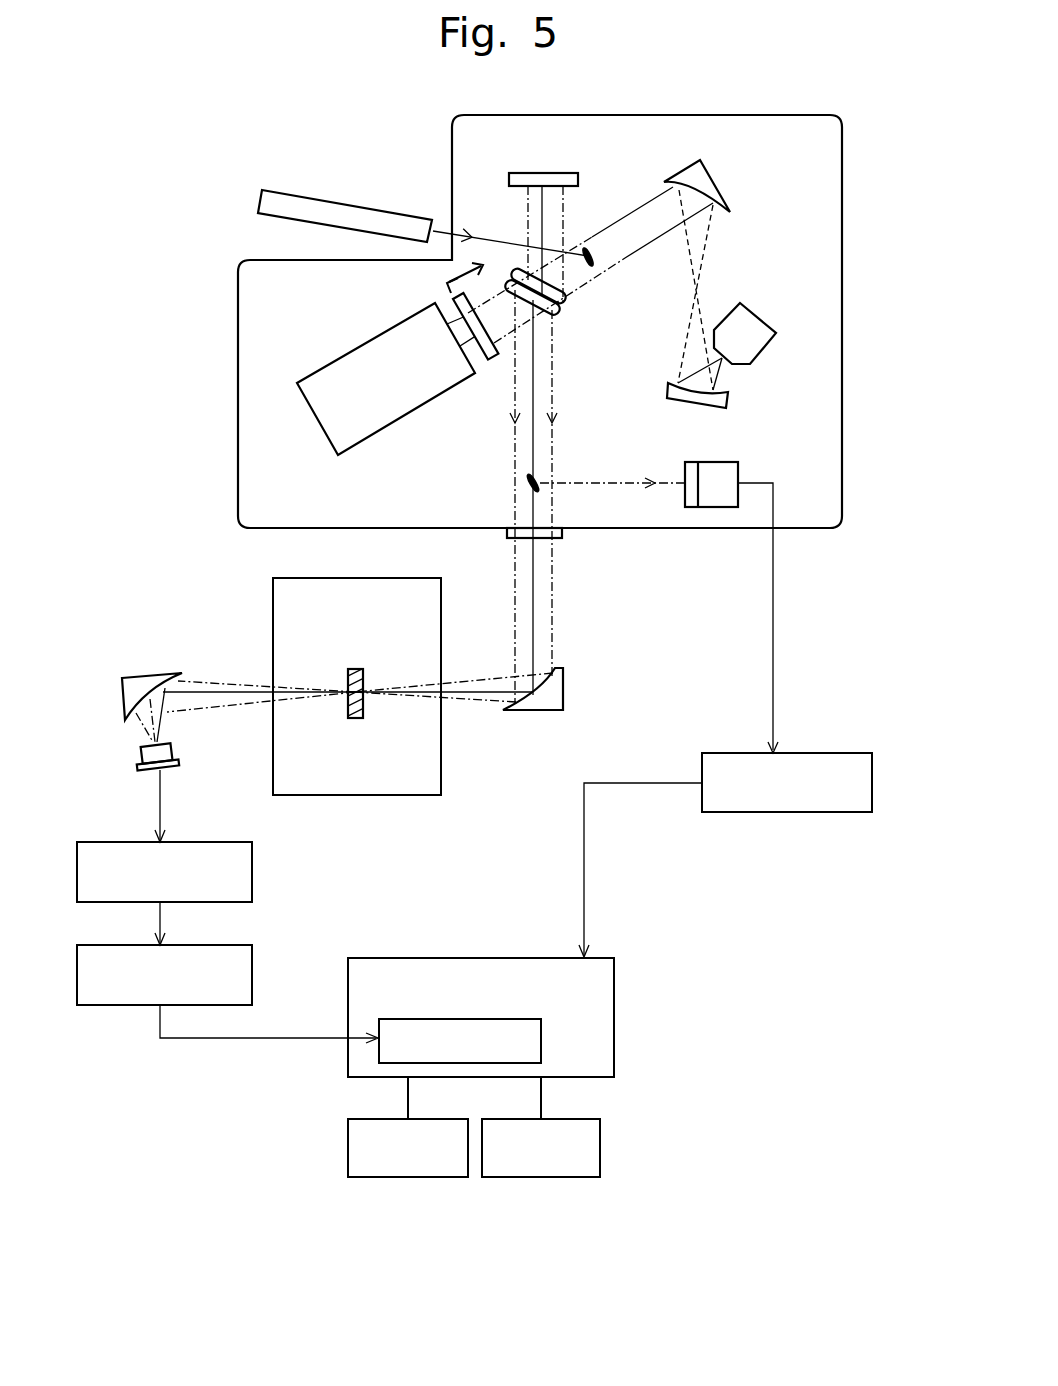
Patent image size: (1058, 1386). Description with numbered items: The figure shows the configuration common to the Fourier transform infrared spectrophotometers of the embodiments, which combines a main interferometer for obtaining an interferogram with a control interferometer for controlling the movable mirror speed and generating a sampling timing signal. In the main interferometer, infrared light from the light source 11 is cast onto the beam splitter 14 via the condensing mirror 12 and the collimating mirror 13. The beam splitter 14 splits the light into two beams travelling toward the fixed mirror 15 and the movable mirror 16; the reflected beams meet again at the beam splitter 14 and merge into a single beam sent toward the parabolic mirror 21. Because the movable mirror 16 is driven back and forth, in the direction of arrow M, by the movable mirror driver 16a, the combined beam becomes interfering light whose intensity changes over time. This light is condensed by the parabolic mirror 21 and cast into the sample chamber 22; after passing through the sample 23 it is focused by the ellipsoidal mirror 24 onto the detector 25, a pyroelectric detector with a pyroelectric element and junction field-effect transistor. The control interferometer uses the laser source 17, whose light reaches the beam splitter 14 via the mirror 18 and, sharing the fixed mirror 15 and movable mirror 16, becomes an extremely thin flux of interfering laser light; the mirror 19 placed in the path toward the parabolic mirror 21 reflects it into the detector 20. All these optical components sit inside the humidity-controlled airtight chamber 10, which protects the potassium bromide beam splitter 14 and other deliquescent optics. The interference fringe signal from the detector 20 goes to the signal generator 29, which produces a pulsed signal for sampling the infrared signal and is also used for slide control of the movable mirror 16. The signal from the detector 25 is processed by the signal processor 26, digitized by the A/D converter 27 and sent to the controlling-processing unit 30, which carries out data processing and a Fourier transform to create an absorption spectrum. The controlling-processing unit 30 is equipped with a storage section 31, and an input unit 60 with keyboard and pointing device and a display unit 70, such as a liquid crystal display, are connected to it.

The airtight chamber 10 is at (238, 413).
The light source 11 is at (763, 319).
The condensing mirror 12 is at (730, 400).
The collimating mirror 13 is at (722, 183).
The beam splitter 14 is at (562, 306).
The fixed mirror 15 is at (561, 172).
The movable mirror 16 is at (490, 362).
The movable mirror driver 16a is at (373, 437).
The laser source 17 is at (356, 206).
The mirror 18 is at (595, 262).
The mirror 19 is at (527, 481).
The detector 20 is at (740, 470).
The parabolic mirror 21 is at (565, 690).
The sample chamber 22 is at (306, 797).
The sample 23 is at (355, 667).
The ellipsoidal mirror 24 is at (140, 675).
The detector 25 is at (138, 760).
The signal processor 26 is at (253, 877).
The analogue-to-digital converter 27 is at (253, 978).
The signal generator 29 is at (823, 752).
The controlling-processing unit 30 is at (615, 1010).
The storage section 31 is at (543, 1040).
The input unit 60 is at (426, 1178).
The display unit 70 is at (555, 1178).